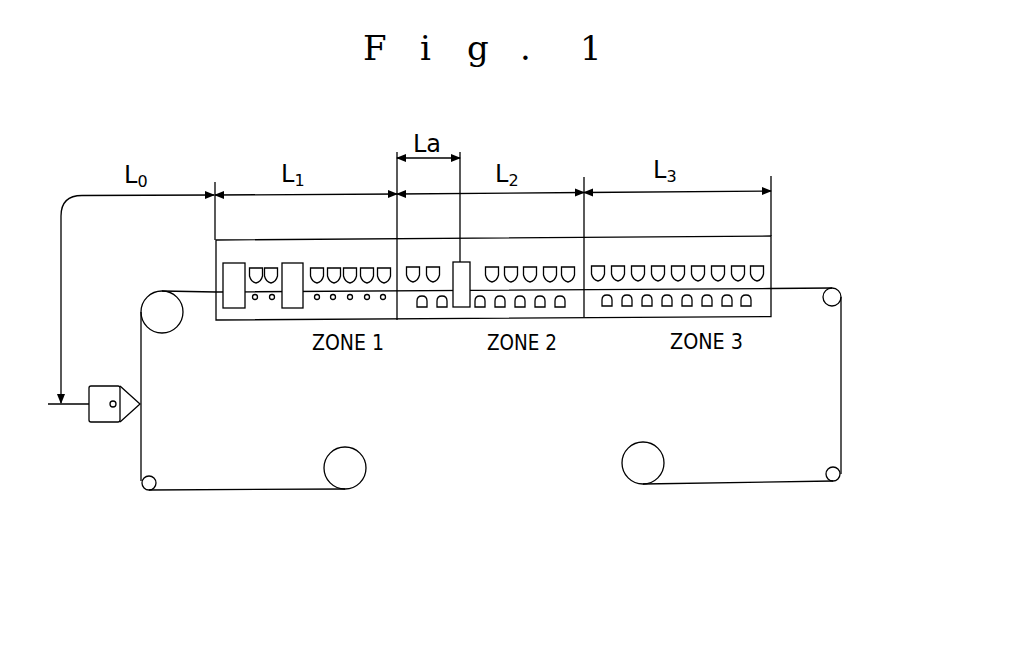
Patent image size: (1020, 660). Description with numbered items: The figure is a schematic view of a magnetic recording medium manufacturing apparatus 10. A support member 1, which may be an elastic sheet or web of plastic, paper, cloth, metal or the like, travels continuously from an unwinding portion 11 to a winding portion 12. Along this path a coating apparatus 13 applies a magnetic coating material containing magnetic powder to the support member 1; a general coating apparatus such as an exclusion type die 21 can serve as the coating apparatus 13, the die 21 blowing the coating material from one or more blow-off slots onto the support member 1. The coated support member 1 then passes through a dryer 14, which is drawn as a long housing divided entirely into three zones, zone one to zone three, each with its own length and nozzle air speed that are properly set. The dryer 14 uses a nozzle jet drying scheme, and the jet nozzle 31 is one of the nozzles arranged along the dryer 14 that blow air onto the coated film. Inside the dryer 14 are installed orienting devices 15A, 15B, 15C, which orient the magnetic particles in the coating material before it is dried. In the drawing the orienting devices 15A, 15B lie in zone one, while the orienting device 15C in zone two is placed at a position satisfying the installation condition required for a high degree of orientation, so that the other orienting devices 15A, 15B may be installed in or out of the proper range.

The support member 1 is at (257, 492).
The magnetic recording medium manufacturing apparatus 10 is at (231, 164).
The unwinding portion 11 is at (366, 468).
The winding portion 12 is at (622, 470).
The coating apparatus 13 is at (107, 426).
The dryer 14 is at (437, 322).
The orienting device 15A is at (233, 308).
The orienting device 15B is at (290, 308).
The orienting device 15C is at (461, 307).
The exclusion type die 21 is at (107, 386).
The jet nozzle 31 is at (366, 266).